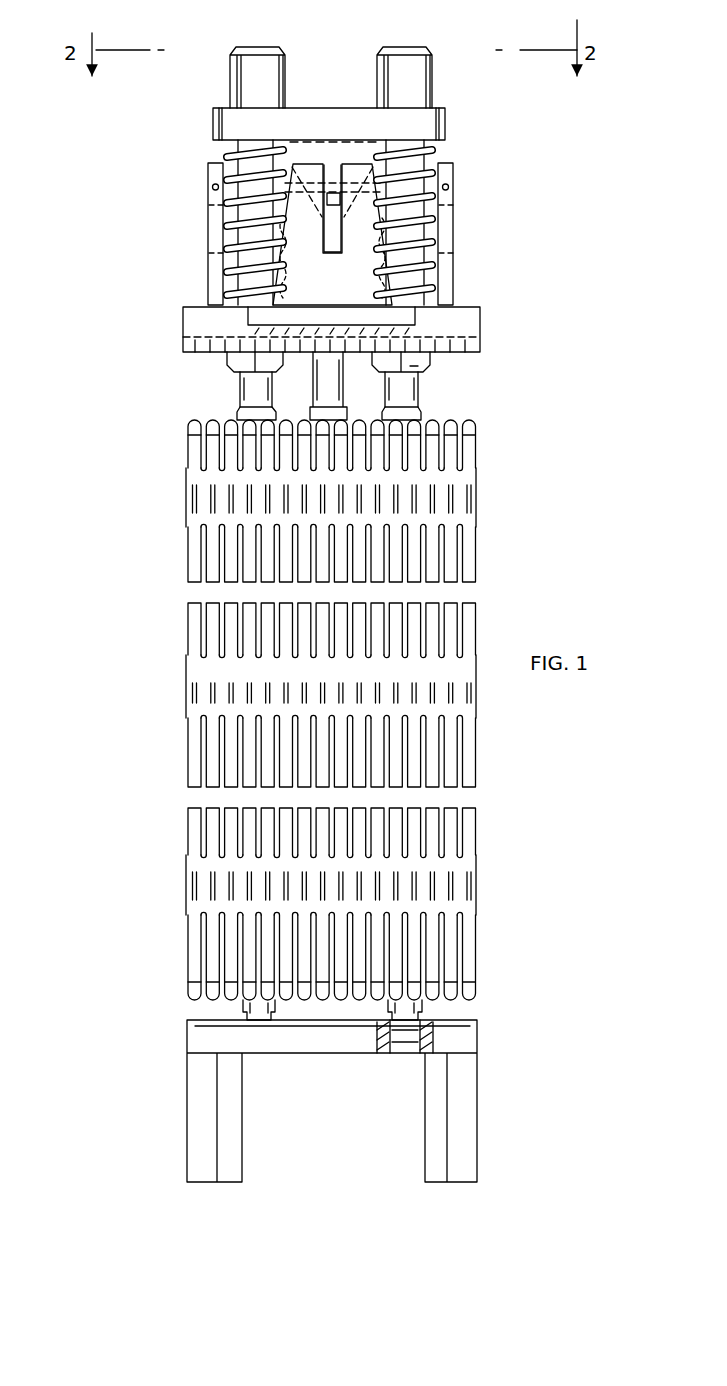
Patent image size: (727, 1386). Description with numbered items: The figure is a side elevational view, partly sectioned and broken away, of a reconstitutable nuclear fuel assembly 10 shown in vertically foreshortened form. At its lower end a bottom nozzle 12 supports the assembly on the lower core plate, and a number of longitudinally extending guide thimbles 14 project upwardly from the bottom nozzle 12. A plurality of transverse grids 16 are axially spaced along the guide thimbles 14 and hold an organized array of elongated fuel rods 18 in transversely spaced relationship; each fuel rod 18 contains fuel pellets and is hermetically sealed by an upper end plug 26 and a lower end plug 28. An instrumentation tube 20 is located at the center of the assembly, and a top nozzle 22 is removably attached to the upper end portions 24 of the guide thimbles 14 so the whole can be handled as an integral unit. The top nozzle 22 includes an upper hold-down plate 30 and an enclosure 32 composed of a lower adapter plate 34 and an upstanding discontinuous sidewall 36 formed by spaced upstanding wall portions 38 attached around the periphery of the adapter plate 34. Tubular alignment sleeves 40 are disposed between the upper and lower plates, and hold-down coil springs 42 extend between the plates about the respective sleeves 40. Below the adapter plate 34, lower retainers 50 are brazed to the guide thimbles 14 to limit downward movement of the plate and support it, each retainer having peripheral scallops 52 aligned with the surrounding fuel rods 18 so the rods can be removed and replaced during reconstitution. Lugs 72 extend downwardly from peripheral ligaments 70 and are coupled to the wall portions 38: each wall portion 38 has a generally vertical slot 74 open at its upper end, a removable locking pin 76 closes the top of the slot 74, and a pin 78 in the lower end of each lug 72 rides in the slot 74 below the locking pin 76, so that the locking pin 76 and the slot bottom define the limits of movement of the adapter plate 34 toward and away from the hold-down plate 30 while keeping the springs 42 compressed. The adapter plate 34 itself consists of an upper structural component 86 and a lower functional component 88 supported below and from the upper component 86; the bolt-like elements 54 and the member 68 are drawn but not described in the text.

The fuel assembly 10 is at (108, 490).
The bottom nozzle 12 is at (478, 1085).
The guide thimbles 14 is at (238, 401).
The transverse grids 16 is at (478, 500).
The fuel rods 18 is at (206, 830).
The instrumentation tube 20 is at (329, 372).
The top nozzle 22 is at (476, 161).
The upper end portions 24 is at (238, 385).
The upper end plug 26 is at (195, 430).
The lower end plug 28 is at (216, 985).
The upper hold-down plate 30 is at (449, 125).
The enclosure 32 is at (486, 293).
The lower adapter plate 34 is at (481, 309).
The discontinuous sidewall 36 is at (206, 276).
The upstanding wall portions 38 is at (208, 182).
The tubular alignment sleeves 40 is at (232, 247).
The hold-down coil springs 42 is at (238, 226).
The lower retainers 50 is at (421, 352).
The scallops 52 is at (238, 370).
The bolts 54 is at (396, 46).
The top clamp bar 68 is at (213, 120).
The ligaments 70 is at (330, 108).
The lugs 72 is at (228, 163).
The vertical slot 74 is at (333, 240).
The locking pin 76 is at (322, 226).
The pin 78 is at (334, 200).
The upper structural component 86 is at (182, 308).
The lower functional component 88 is at (182, 337).